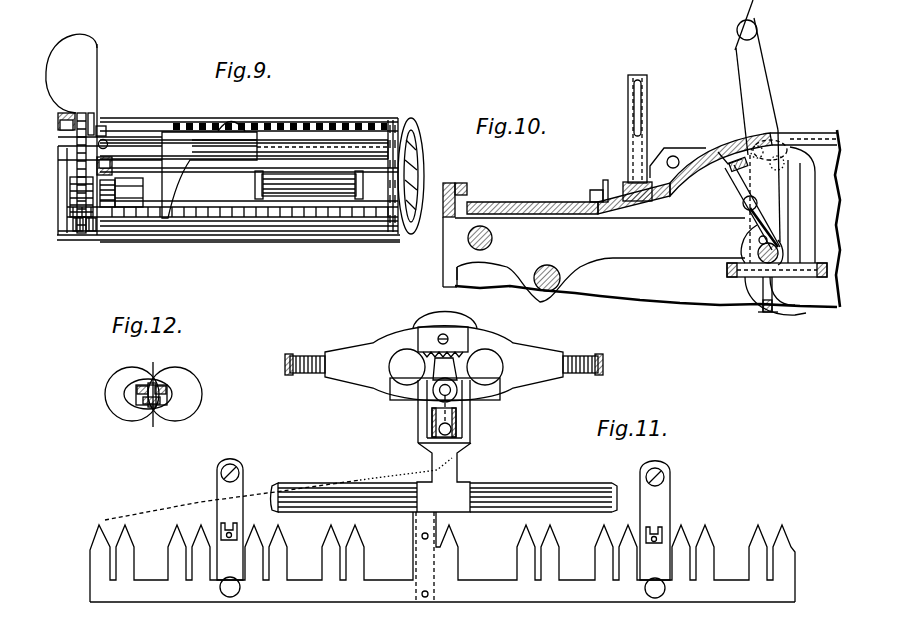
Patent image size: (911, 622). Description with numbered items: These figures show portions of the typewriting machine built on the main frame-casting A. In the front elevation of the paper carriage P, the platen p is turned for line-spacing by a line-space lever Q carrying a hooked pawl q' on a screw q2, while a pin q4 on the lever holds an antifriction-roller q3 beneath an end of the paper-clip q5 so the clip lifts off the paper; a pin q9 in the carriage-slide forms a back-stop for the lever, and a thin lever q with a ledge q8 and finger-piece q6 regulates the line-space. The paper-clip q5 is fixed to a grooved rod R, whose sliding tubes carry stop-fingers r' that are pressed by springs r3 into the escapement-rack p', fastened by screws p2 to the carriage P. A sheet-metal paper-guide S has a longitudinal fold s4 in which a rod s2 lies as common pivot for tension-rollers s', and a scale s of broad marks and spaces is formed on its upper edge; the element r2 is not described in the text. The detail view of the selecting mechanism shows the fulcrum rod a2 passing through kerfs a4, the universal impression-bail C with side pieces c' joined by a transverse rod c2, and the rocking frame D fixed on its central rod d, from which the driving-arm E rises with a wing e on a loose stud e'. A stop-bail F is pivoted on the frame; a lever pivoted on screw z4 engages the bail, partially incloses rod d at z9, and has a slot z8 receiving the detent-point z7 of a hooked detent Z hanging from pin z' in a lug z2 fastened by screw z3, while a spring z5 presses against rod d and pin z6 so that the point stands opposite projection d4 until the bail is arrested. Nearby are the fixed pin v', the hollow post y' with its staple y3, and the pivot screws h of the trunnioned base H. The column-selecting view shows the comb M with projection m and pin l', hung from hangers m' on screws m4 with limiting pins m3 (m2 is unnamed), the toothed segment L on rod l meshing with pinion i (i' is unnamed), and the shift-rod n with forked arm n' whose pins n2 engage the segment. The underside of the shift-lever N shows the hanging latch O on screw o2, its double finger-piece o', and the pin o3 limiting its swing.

In FIG. 9, the line-space lever Q is at (82, 134).
In FIG. 9, the hooked pawl q' is at (78, 170).
In FIG. 9, the screw q2 is at (94, 116).
In FIG. 9, the paper-clip q5 is at (100, 132).
In FIG. 9, the ledge q8 is at (60, 118).
In FIG. 9, the springs r3 is at (60, 143).
In FIG. 9, the platen p is at (98, 190).
In FIG. 9, the pin q4 is at (113, 165).
In FIG. 9, the antifriction-roller q3 is at (115, 186).
In FIG. 9, the screws p2 is at (121, 193).
In FIG. 9, the thin lever q is at (64, 197).
In FIG. 9, the finger-piece q6 is at (70, 206).
In FIG. 9, the rod l is at (69, 229).
In FIG. 11, the rod l is at (444, 390).
In FIG. 9, the escapement-rack p' is at (221, 237).
In FIG. 9, the pin q9 is at (95, 232).
In FIG. 9, the stop-fingers r' is at (209, 175).
In FIG. 9, the tab r2 is at (234, 120).
In FIG. 9, the scale s is at (249, 122).
In FIG. 9, the longitudinal fold s4 is at (236, 183).
In FIG. 9, the tension-rollers s' is at (309, 178).
In FIG. 9, the grooved rod R is at (352, 149).
In FIG. 9, the rod s2 is at (382, 215).
In FIG. 9, the paper-guide S is at (403, 219).
In FIG. 9, the paper-carriage P is at (246, 241).
In FIG. 10, the kerfs a4 is at (446, 235).
In FIG. 10, the universal impression-bail C is at (600, 260).
In FIG. 10, the frame-casting A is at (555, 283).
In FIG. 10, the side pieces c' is at (620, 240).
In FIG. 10, the fulcrum rod a2 is at (492, 239).
In FIG. 10, the transverse rod c2 is at (538, 280).
In FIG. 10, the fixed pin v' is at (600, 182).
In FIG. 10, the hollow post y' is at (629, 138).
In FIG. 10, the staple y3 is at (641, 101).
In FIG. 10, the wing e is at (749, 21).
In FIG. 10, the loose stud e' is at (736, 25).
In FIG. 10, the driving-arm E is at (764, 82).
In FIG. 10, the screw z3 is at (746, 142).
In FIG. 10, the lug z2 is at (808, 140).
In FIG. 10, the pin z' is at (767, 168).
In FIG. 10, the stop-bail F is at (730, 167).
In FIG. 10, the hooked detent Z is at (808, 296).
In FIG. 10, the screw z4 is at (735, 186).
In FIG. 10, the spring z5 is at (742, 205).
In FIG. 10, the pin z6 is at (741, 232).
In FIG. 10, the central rod d is at (748, 252).
In FIG. 10, the partial enclosure z9 is at (786, 262).
In FIG. 10, the rocking frame D is at (712, 286).
In FIG. 10, the projection d4 is at (760, 283).
In FIG. 10, the slot z8 is at (756, 310).
In FIG. 10, the detent-point z7 is at (766, 314).
In FIG. 11, the comb M is at (442, 557).
In FIG. 11, the projection m is at (440, 522).
In FIG. 11, the shift-rod n is at (444, 491).
In FIG. 11, the forked arm n' is at (431, 467).
In FIG. 11, the hangers m' is at (402, 519).
In FIG. 11, the screws m4 is at (250, 492).
In FIG. 11, the pins m3 is at (444, 523).
In FIG. 11, the roller m2 is at (442, 589).
In FIG. 11, the trunnioned base H is at (444, 356).
In FIG. 11, the screws h is at (444, 355).
In FIG. 11, the pins n2 is at (446, 367).
In FIG. 11, the pinion i is at (443, 339).
In FIG. 11, the spring i' is at (443, 344).
In FIG. 11, the toothed segment L is at (445, 368).
In FIG. 11, the pin l' is at (444, 411).
In FIG. 12, the hanging latch O is at (168, 393).
In FIG. 12, the double finger-piece o' is at (119, 394).
In FIG. 12, the pin o3 is at (140, 386).
In FIG. 12, the screw o2 is at (153, 378).
In FIG. 12, the shift-lever N is at (153, 410).